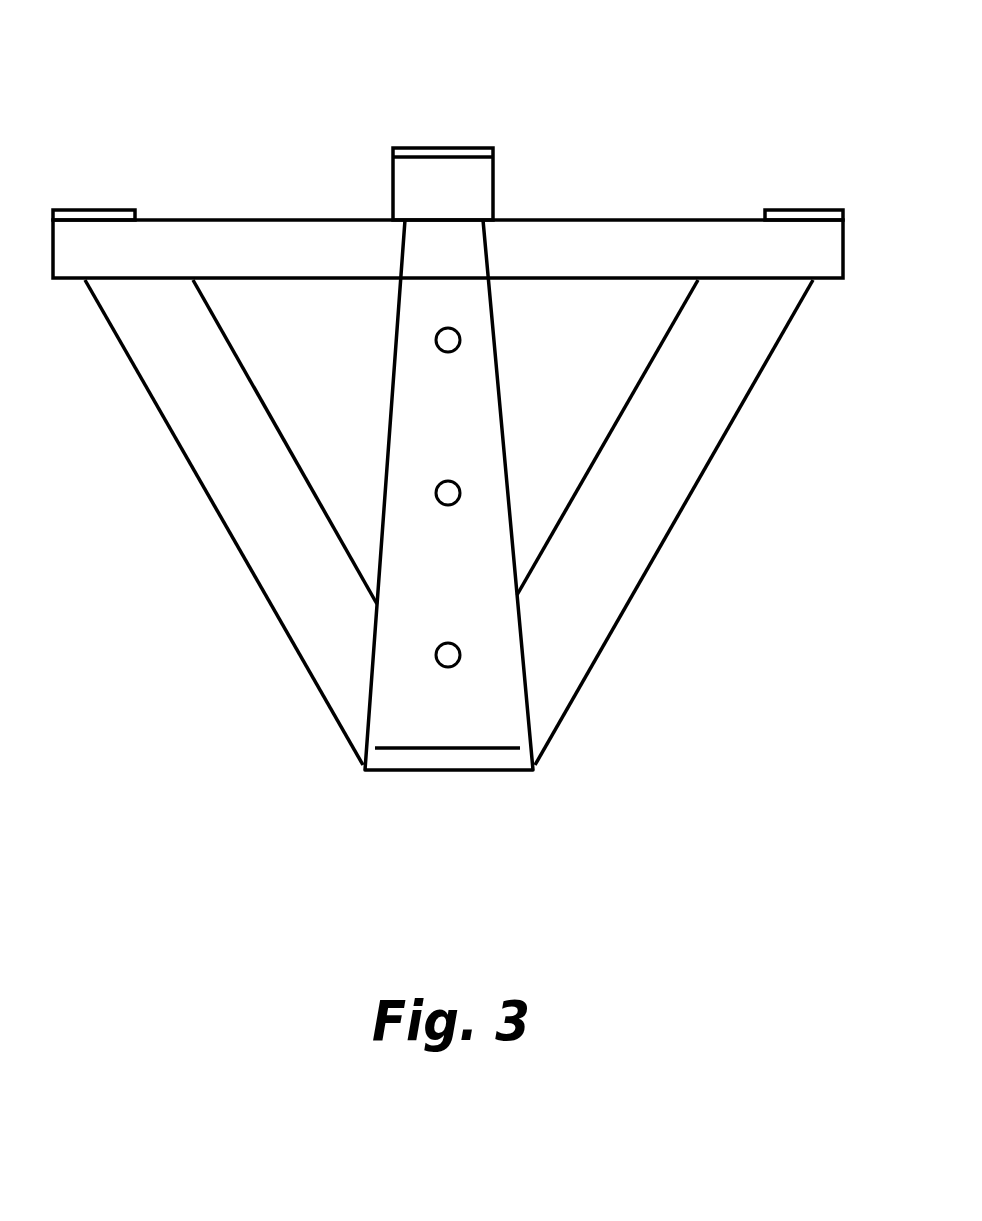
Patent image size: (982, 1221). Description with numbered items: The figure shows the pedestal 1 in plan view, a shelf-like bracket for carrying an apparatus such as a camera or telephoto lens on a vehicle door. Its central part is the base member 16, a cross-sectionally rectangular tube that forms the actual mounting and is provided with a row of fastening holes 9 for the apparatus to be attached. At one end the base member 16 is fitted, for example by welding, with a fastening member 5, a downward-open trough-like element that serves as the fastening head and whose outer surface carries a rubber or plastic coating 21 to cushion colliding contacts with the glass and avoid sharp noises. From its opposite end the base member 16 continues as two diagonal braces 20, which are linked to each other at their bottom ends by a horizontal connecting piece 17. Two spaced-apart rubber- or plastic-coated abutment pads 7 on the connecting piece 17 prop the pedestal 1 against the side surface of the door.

The pedestal 1 is at (678, 628).
The fastening member 5 is at (452, 172).
The abutment pads 7 is at (95, 212).
The fastening holes 9 is at (445, 655).
The base member 16 is at (463, 412).
The connecting piece 17 is at (735, 243).
The diagonal braces 20 is at (265, 540).
The rubber or plastic coating 21 is at (418, 148).